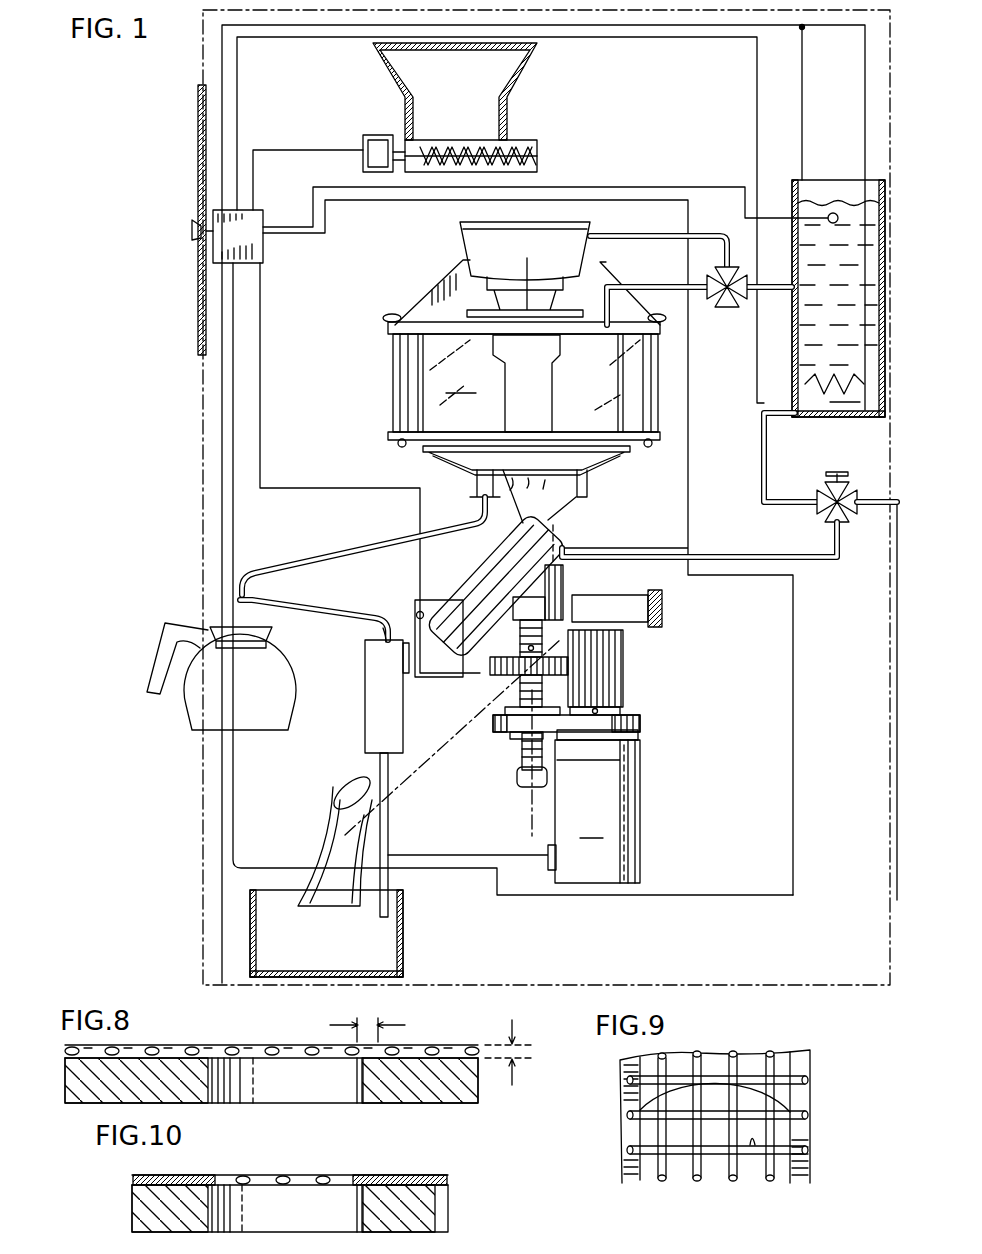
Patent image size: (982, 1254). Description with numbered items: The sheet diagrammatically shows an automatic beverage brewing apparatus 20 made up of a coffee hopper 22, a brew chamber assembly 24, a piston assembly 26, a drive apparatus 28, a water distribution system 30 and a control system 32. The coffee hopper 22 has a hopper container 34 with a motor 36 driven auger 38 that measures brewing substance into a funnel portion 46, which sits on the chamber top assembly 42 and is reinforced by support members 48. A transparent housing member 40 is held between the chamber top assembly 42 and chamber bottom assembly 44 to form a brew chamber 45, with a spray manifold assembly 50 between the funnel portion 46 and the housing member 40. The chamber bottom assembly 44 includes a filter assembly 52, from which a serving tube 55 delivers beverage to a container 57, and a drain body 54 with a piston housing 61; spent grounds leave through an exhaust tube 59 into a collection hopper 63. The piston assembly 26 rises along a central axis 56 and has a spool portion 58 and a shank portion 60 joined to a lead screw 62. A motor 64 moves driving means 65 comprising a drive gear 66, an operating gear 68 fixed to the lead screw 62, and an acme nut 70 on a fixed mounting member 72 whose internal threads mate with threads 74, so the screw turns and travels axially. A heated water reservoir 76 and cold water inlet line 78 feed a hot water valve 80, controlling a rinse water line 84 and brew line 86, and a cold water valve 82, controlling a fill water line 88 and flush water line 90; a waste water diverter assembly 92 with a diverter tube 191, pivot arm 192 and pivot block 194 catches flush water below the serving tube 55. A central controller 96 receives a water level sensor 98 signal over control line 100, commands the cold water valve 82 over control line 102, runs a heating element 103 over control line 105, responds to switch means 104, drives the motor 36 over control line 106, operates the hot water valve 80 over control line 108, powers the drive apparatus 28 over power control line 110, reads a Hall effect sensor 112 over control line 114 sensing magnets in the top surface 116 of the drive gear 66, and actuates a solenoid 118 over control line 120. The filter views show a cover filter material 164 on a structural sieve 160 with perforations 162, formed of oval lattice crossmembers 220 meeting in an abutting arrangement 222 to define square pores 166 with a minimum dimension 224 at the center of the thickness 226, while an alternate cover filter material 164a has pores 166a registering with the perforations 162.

In FIG. 1, the beverage brewing apparatus 20 is at (163, 141).
In FIG. 1, the coffee hopper 22 is at (424, 133).
In FIG. 1, the brew chamber assembly 24 is at (476, 363).
In FIG. 1, the piston assembly 26 is at (518, 674).
In FIG. 1, the drive apparatus 28 is at (594, 786).
In FIG. 1, the water distribution system 30 is at (729, 357).
In FIG. 1, the control system 32 is at (205, 196).
In FIG. 1, the hopper container 34 is at (383, 60).
In FIG. 1, the motor 36 is at (373, 172).
In FIG. 1, the auger 38 is at (502, 140).
In FIG. 1, the housing member 40 is at (400, 395).
In FIG. 1, the chamber top assembly 42 is at (500, 291).
In FIG. 1, the chamber bottom assembly 44 is at (417, 470).
In FIG. 1, the brew chamber 45 is at (461, 383).
In FIG. 1, the funnel portion 46 is at (460, 226).
In FIG. 1, the support members 48 is at (458, 265).
In FIG. 1, the spray manifold assembly 50 is at (388, 330).
In FIG. 1, the filter assembly 52 is at (472, 480).
In FIG. 1, the drain body 54 is at (590, 488).
In FIG. 1, the serving tube 55 is at (295, 556).
In FIG. 1, the central axis 56 is at (532, 812).
In FIG. 1, the container 57 is at (190, 705).
In FIG. 1, the spool portion 58 is at (540, 380).
In FIG. 1, the exhaust tube 59 is at (496, 586).
In FIG. 1, the shank portion 60 is at (520, 631).
In FIG. 1, the piston housing 61 is at (560, 575).
In FIG. 1, the lead screw 62 is at (505, 689).
In FIG. 1, the collection hopper 63 is at (403, 945).
In FIG. 1, the motor 64 is at (597, 806).
In FIG. 1, the driving means 65 is at (500, 560).
In FIG. 1, the drive gear 66 is at (623, 688).
In FIG. 1, the operating gear 68 is at (470, 672).
In FIG. 1, the acme nut 70 is at (520, 745).
In FIG. 1, the mounting member 72 is at (642, 730).
In FIG. 1, the threads 74 is at (505, 712).
In FIG. 1, the heated water reservoir 76 is at (811, 272).
In FIG. 1, the cold water inlet line 78 is at (875, 498).
In FIG. 1, the hot water valve 80 is at (731, 314).
In FIG. 1, the cold water valve 82 is at (857, 514).
In FIG. 1, the rinse water line 84 is at (606, 236).
In FIG. 1, the brew line 86 is at (668, 268).
In FIG. 1, the fill water line 88 is at (757, 440).
In FIG. 1, the flush water line 90 is at (750, 527).
In FIG. 1, the waste water diverter assembly 92 is at (357, 696).
In FIG. 1, the central controller 96 is at (258, 256).
In FIG. 1, the heated water level sensor 98 is at (837, 212).
In FIG. 1, the control line 100 is at (650, 187).
In FIG. 1, the control line 102 is at (793, 685).
In FIG. 1, the heating element 103 is at (806, 382).
In FIG. 1, the switch means 104 is at (193, 232).
In FIG. 1, the control line 105 is at (802, 108).
In FIG. 1, the control line 106 is at (308, 150).
In FIG. 1, the control line 108 is at (757, 100).
In FIG. 1, the power control line 110 is at (435, 855).
In FIG. 1, the Hall effect sensor 112 is at (620, 600).
In FIG. 1, the control line 114 is at (688, 520).
In FIG. 1, the top surface 116 is at (648, 625).
In FIG. 1, the solenoid 118 is at (418, 610).
In FIG. 1, the control line 120 is at (318, 488).
In FIG. 1, the diverter tube 191 is at (328, 600).
In FIG. 1, the pivot arm 192 is at (388, 625).
In FIG. 1, the pivot block 194 is at (372, 660).
In FIG. 8, the structural sieve 160 is at (428, 1088).
In FIG. 10, the structural sieve 160 is at (435, 1205).
In FIG. 9, the structural sieve 160 is at (635, 1096).
In FIG. 8, the perforations 162 is at (357, 1080).
In FIG. 10, the perforations 162 is at (357, 1208).
In FIG. 9, the perforations 162 is at (790, 1170).
In FIG. 8, the cover filter material 164 is at (319, 1039).
In FIG. 9, the cover filter material 164 is at (686, 1137).
In FIG. 10, the cover filter material 164a is at (298, 1157).
In FIG. 8, the pores 166 is at (293, 1045).
In FIG. 9, the pores 166 is at (753, 1147).
In FIG. 10, the pores 166a is at (305, 1175).
In FIG. 8, the lattice crossmembers 220 is at (268, 1045).
In FIG. 9, the lattice crossmembers 220 is at (675, 1155).
In FIG. 9, the abutting arrangement 222 is at (727, 1160).
In FIG. 8, the minimum dimension 224 is at (370, 1018).
In FIG. 8, the thickness 226 is at (520, 1051).